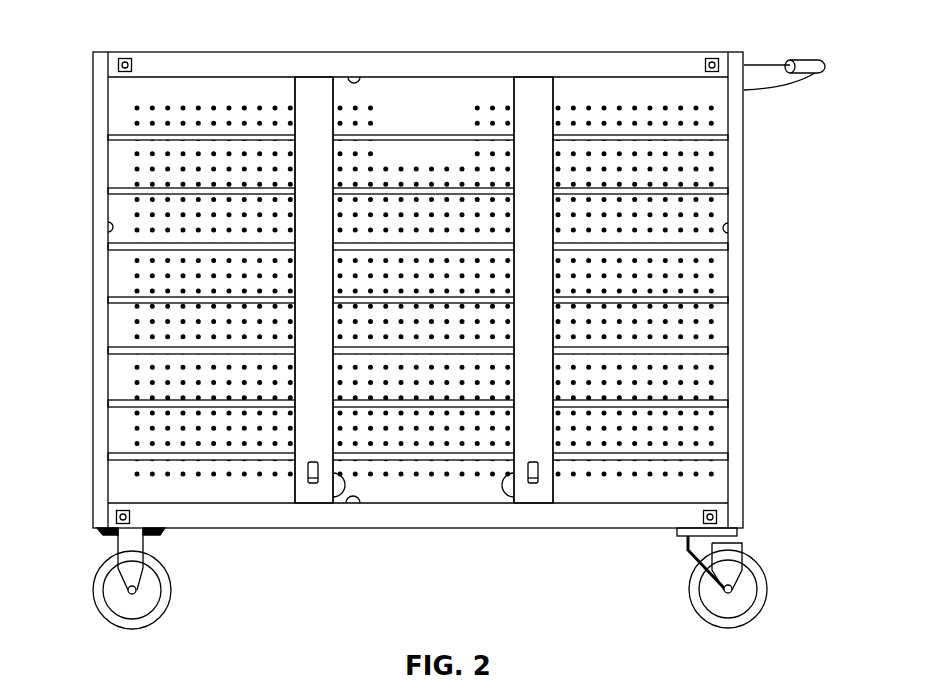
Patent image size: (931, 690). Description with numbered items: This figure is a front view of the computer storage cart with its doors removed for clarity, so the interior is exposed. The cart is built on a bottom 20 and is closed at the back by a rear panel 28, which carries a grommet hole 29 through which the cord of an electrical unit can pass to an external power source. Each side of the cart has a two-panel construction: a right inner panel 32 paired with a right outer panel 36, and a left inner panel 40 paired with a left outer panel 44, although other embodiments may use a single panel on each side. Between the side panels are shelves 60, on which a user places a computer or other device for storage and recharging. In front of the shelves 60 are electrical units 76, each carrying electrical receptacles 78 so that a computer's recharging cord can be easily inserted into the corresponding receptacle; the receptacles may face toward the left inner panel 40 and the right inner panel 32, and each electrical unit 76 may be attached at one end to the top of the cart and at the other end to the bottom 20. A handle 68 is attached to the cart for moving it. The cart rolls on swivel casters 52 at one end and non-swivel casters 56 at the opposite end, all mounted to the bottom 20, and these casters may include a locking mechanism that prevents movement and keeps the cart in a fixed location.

The bottom 20 is at (318, 533).
The rear panel 28 is at (167, 107).
The grommet hole 29 is at (508, 530).
The right inner panel 32 is at (728, 230).
The right outer panel 36 is at (743, 147).
The left inner panel 40 is at (107, 230).
The left outer panel 44 is at (92, 175).
The swivel caster 52 is at (738, 605).
The caster 56 is at (140, 605).
The shelf 60 is at (728, 297).
The handle 68 is at (817, 60).
The electrical unit 76 is at (313, 483).
The electrical receptacle 78 is at (292, 430).